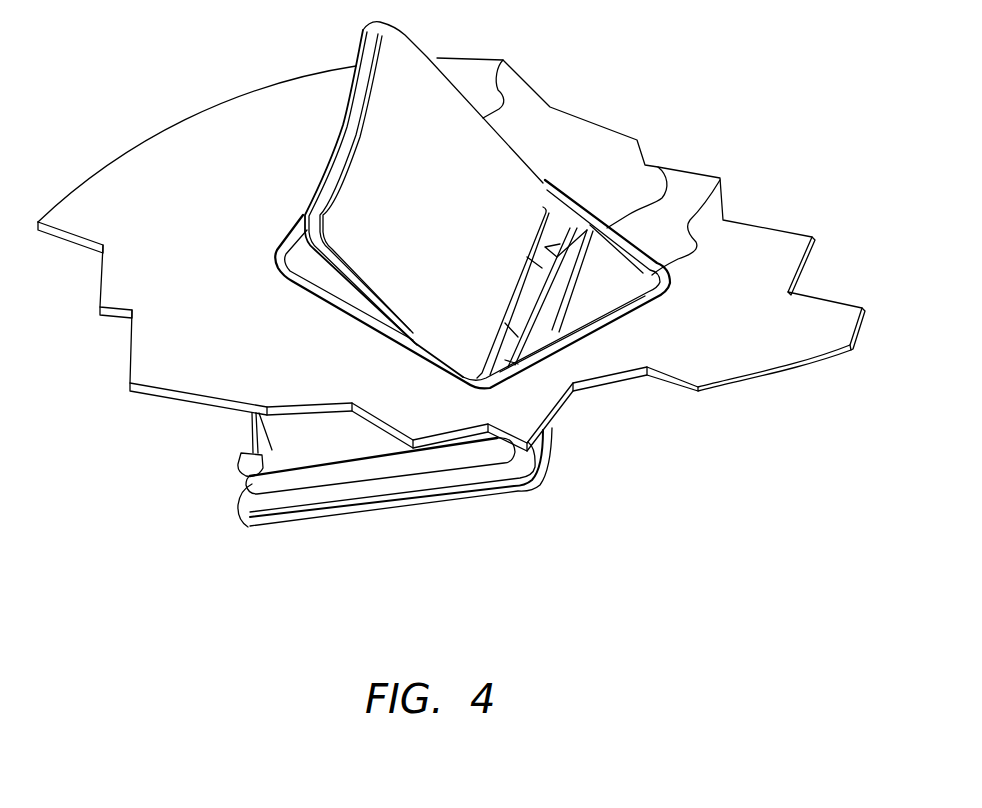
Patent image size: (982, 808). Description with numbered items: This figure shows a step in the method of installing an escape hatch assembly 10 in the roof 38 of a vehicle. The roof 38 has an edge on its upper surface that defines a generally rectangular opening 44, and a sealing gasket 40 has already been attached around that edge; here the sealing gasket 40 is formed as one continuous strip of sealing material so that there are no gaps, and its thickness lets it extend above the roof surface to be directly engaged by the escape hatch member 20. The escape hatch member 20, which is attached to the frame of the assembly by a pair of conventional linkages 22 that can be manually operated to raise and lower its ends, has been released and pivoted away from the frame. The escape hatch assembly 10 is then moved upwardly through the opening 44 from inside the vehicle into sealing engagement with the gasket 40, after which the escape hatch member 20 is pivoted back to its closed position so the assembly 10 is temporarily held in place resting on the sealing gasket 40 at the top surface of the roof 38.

The escape hatch assembly 10 is at (462, 503).
The escape hatch member 20 is at (447, 137).
The linkages 22 is at (250, 430).
The roof 38 is at (735, 289).
The sealing gasket 40 is at (607, 228).
The opening 44 is at (640, 280).